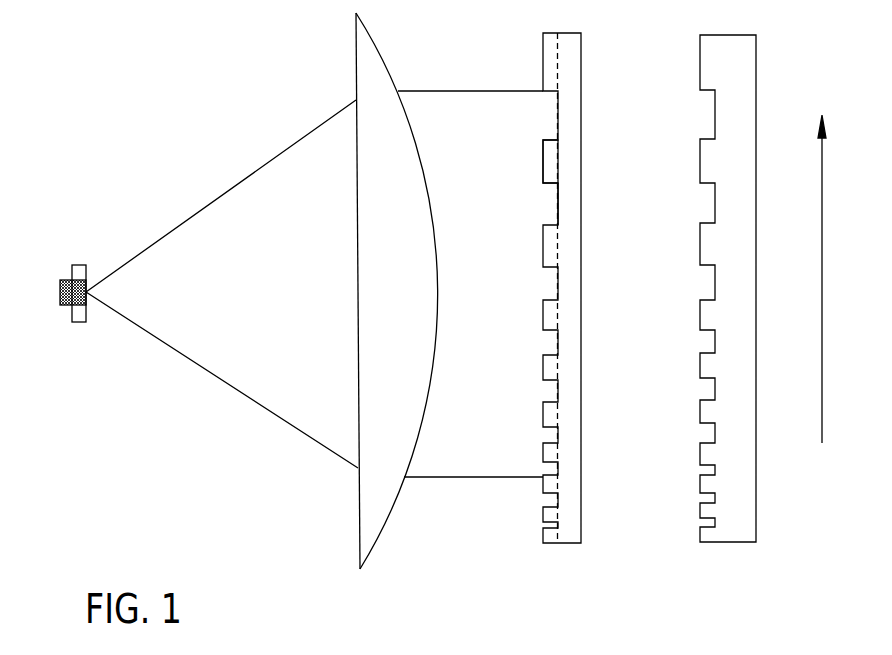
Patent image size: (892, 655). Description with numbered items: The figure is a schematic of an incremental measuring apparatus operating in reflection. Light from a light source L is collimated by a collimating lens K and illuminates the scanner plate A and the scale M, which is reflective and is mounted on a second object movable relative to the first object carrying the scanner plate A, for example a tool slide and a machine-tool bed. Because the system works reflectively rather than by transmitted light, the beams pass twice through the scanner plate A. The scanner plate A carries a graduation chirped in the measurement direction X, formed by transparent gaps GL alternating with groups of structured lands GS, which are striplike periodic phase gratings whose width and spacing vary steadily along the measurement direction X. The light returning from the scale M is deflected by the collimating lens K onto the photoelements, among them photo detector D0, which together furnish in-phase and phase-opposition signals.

The light source L is at (66, 280).
The photo detector D0 is at (78, 322).
The collimating lens K is at (369, 507).
The scanner plate A is at (575, 545).
The structured lands GS is at (549, 151).
The transparent gaps GL is at (549, 203).
The scale M is at (735, 532).
The measurement direction X is at (838, 279).